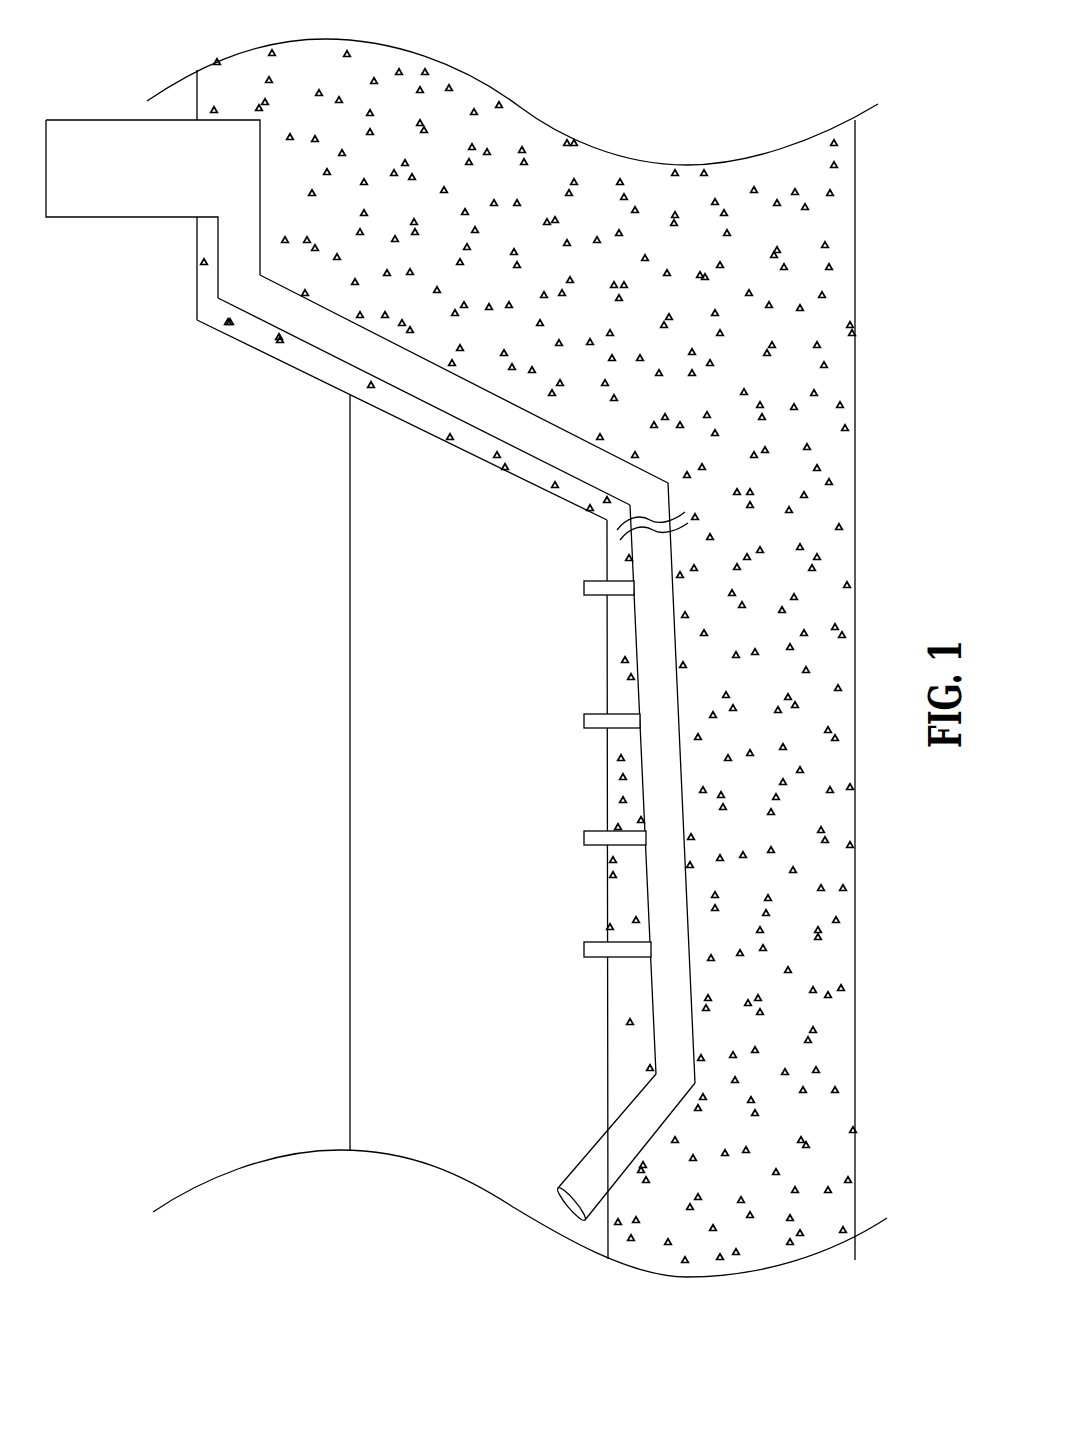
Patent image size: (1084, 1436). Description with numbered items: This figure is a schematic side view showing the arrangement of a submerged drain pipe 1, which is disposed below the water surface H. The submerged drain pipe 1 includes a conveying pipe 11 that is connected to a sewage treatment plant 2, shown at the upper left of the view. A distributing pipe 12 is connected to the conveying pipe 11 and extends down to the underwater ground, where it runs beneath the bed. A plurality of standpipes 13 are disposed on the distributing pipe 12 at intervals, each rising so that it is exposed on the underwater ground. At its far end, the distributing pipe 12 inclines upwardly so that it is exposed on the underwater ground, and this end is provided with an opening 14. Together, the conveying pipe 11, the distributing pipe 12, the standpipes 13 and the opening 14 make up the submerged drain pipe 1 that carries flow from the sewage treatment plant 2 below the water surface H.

The submerged drain pipe 1 is at (559, 815).
The sewage treatment plant 2 is at (123, 133).
The conveying pipe 11 is at (545, 452).
The distributing pipe 12 is at (657, 645).
The standpipes 13 is at (583, 721).
The opening 14 is at (568, 1208).
The water surface H is at (350, 952).